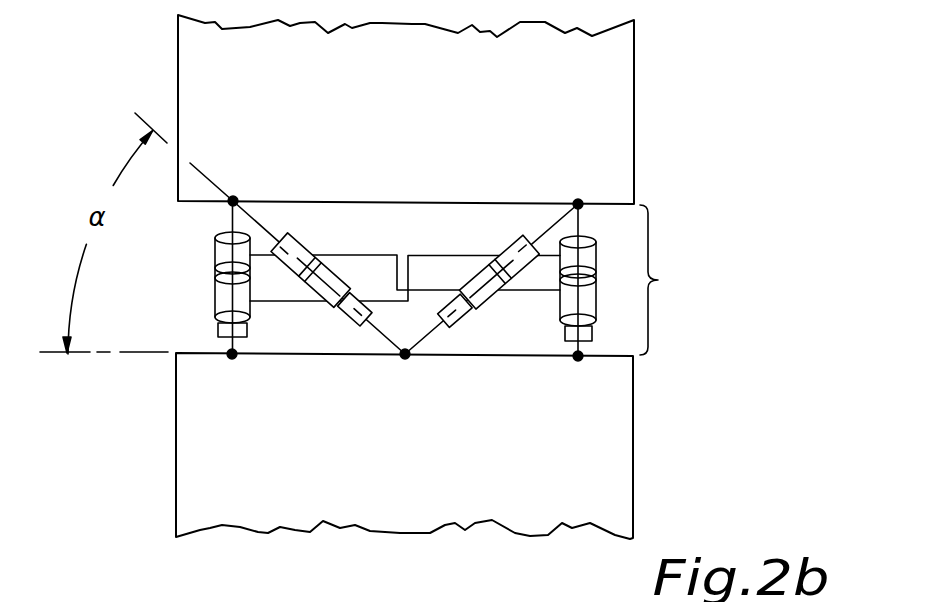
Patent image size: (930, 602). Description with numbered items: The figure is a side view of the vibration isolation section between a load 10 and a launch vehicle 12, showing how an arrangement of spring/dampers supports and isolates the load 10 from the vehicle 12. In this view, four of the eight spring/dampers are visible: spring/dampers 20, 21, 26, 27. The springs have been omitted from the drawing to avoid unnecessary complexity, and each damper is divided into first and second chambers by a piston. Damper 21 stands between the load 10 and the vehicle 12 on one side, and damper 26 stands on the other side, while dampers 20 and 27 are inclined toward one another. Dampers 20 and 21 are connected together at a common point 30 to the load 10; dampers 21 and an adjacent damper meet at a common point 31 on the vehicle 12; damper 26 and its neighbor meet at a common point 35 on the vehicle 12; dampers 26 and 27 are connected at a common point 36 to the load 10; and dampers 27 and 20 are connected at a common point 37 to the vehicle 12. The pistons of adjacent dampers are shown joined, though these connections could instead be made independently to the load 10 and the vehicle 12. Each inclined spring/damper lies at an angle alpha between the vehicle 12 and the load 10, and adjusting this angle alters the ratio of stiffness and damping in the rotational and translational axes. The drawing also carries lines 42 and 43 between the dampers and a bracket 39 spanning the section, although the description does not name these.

The load 10 is at (388, 158).
The launch vehicle 12 is at (383, 496).
The spring/damper 20 is at (334, 306).
The spring/damper 21 is at (215, 272).
The spring/damper 26 is at (597, 280).
The spring/damper 27 is at (490, 300).
The common point 30 is at (233, 199).
The common point 31 is at (232, 357).
The common point 35 is at (578, 358).
The common point 36 is at (578, 202).
The common point 37 is at (405, 357).
The suspension system 39 is at (670, 280).
The hydraulic line 42 is at (354, 254).
The hydraulic line 43 is at (420, 255).